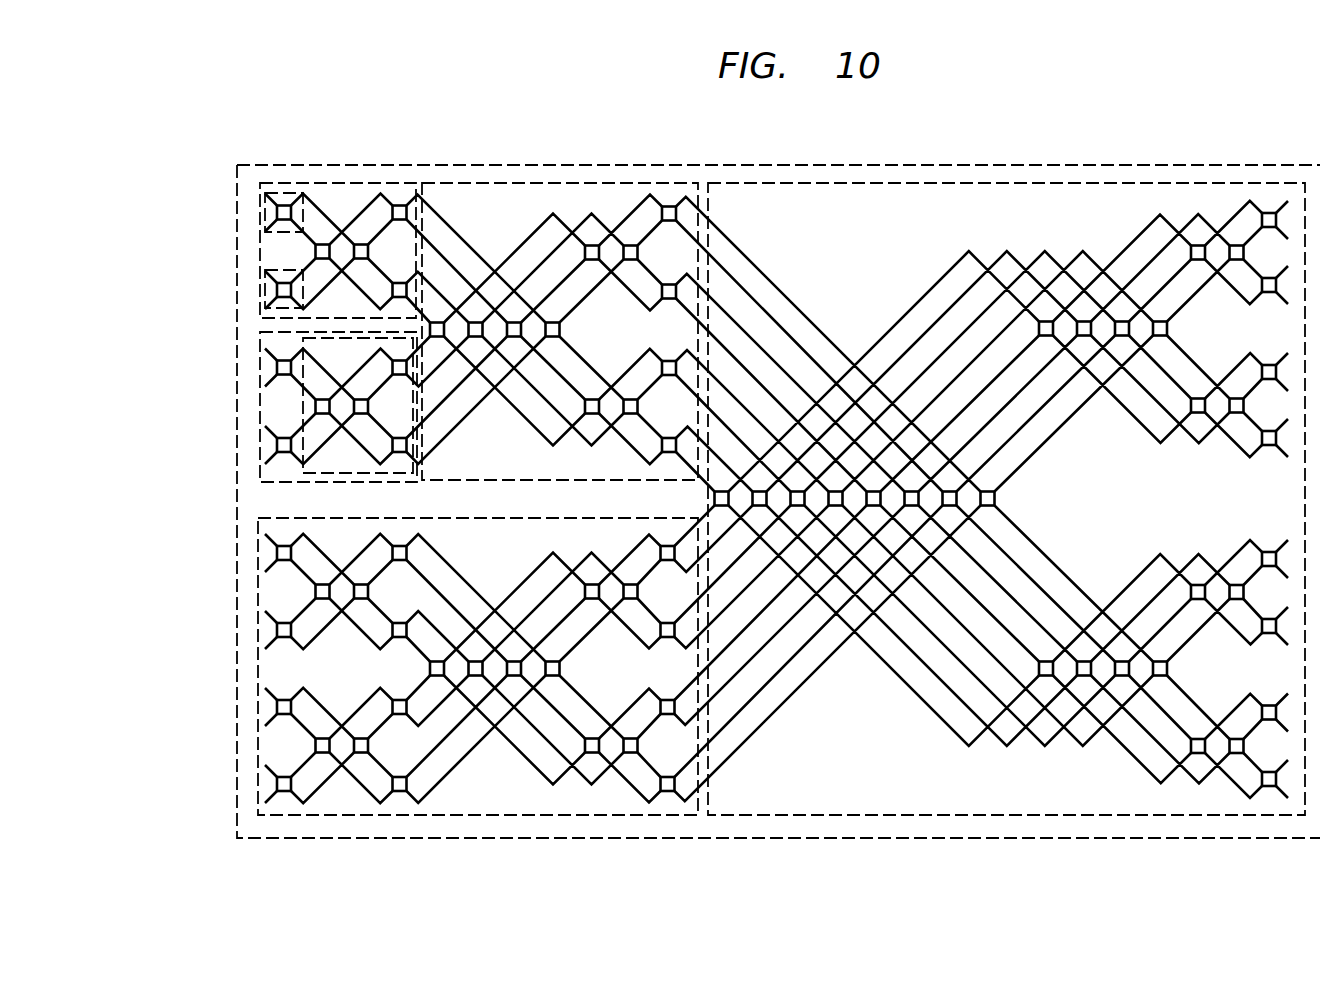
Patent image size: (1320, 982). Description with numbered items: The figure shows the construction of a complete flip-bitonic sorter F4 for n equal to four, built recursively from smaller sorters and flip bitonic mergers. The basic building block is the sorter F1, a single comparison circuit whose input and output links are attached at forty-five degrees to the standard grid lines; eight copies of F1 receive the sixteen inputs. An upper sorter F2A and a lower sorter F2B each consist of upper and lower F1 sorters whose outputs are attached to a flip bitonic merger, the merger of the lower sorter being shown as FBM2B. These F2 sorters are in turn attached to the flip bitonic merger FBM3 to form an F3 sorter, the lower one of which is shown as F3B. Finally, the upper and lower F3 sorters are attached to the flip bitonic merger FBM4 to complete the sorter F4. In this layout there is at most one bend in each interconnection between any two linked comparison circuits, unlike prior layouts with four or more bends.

The single comparison circuit sorter F1 is at (280, 195).
The upper F2 sorter F2A is at (337, 208).
The lower F2 sorter F2B is at (274, 383).
The lower F3 sorter F3B is at (482, 790).
The flip-bitonic sorter F4 is at (763, 168).
The flip bitonic merger of lower F2 sorter FBM2B is at (330, 348).
The flip bitonic merger FBM3 is at (516, 225).
The flip bitonic merger FBM4 is at (860, 251).